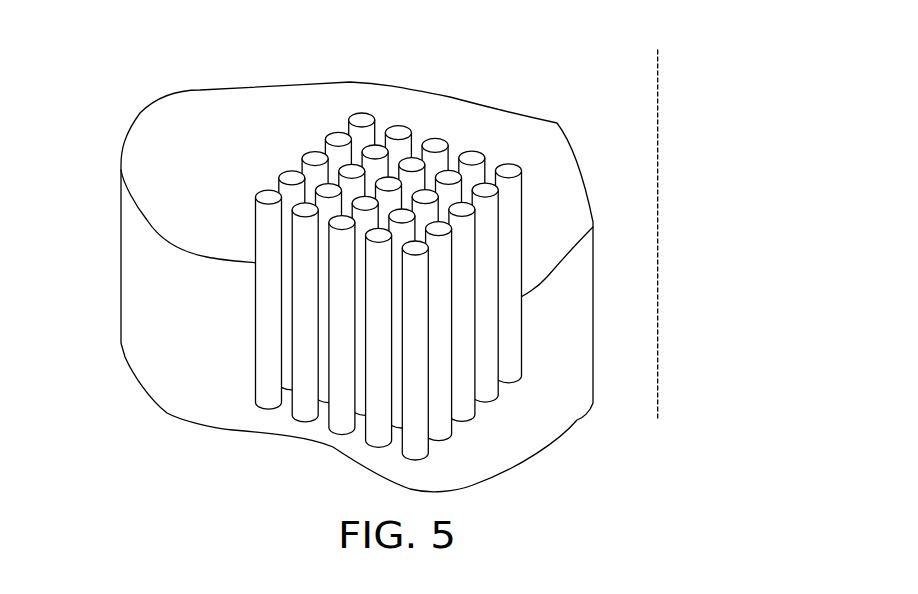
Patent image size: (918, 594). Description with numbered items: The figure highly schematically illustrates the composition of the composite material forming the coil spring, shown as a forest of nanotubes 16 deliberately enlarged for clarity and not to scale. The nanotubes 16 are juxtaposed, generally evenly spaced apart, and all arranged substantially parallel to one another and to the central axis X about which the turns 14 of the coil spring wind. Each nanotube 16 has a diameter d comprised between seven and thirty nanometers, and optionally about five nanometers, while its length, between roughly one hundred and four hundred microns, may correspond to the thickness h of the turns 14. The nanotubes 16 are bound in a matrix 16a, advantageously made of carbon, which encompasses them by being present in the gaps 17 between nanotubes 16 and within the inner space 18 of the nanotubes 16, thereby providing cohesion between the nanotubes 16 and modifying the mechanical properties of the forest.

The turns 14 is at (168, 172).
The nanotubes 16 is at (493, 275).
The matrix 16a is at (322, 98).
The gaps 17 is at (418, 138).
The inner space 18 is at (478, 149).
The thickness h is at (79, 167).
The diameter d is at (297, 212).
The central axis X is at (660, 120).